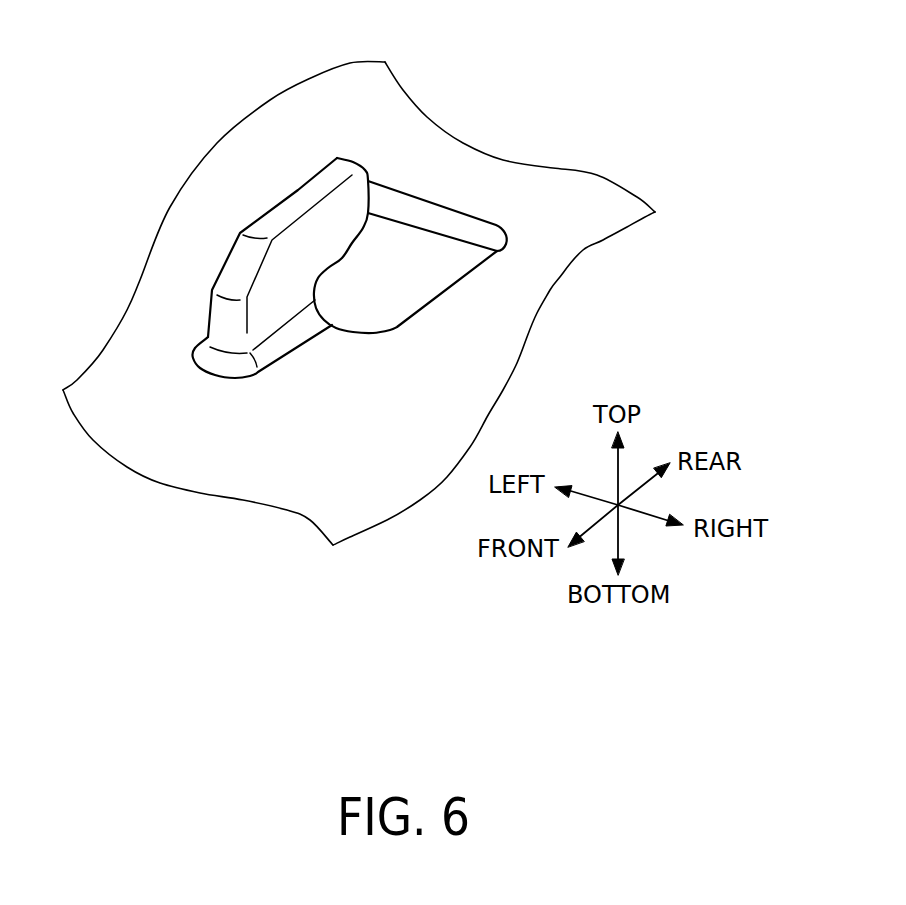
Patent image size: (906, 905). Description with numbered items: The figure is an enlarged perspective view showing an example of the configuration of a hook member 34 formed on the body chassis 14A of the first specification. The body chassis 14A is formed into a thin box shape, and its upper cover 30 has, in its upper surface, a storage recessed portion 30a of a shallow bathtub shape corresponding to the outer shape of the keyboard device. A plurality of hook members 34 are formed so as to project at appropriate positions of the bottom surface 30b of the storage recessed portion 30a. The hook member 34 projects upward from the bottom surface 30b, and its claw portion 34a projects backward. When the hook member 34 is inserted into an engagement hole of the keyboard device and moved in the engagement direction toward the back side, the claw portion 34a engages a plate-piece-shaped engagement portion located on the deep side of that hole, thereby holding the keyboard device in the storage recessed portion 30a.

The body chassis 14A is at (110, 76).
The upper cover 30 is at (235, 185).
The storage recessed portion 30a is at (553, 187).
The bottom surface 30b is at (508, 295).
The hook member 34 is at (295, 202).
The claw portion 34a is at (335, 217).